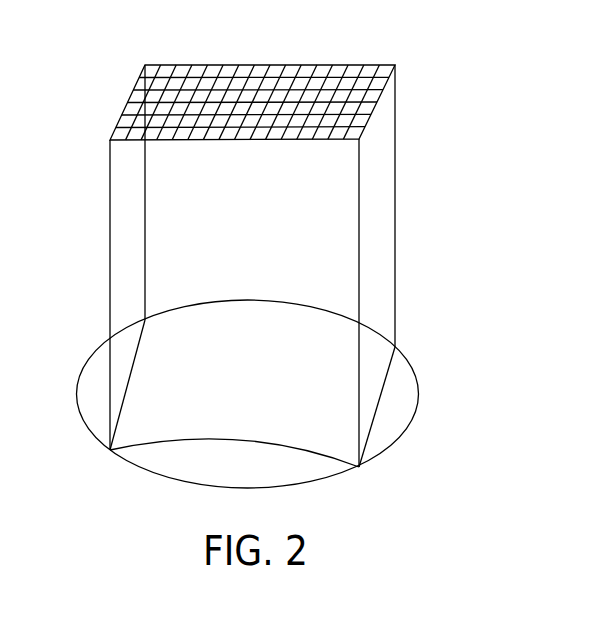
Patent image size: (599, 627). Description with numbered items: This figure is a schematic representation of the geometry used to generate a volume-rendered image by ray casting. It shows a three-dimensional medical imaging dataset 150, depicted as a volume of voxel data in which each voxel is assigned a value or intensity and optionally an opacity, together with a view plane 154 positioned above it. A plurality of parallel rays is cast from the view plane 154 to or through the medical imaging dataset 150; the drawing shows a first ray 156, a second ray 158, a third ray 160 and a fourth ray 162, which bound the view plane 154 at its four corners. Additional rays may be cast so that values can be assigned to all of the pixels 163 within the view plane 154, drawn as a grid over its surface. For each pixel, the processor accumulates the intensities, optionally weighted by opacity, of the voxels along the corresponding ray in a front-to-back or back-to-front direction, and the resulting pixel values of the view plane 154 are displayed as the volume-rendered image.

The 3D medical imaging dataset 150 is at (403, 411).
The view plane 154 is at (383, 87).
The first ray 156 is at (146, 208).
The second ray 158 is at (110, 257).
The third ray 160 is at (396, 206).
The fourth ray 162 is at (359, 247).
The pixels 163 is at (178, 67).